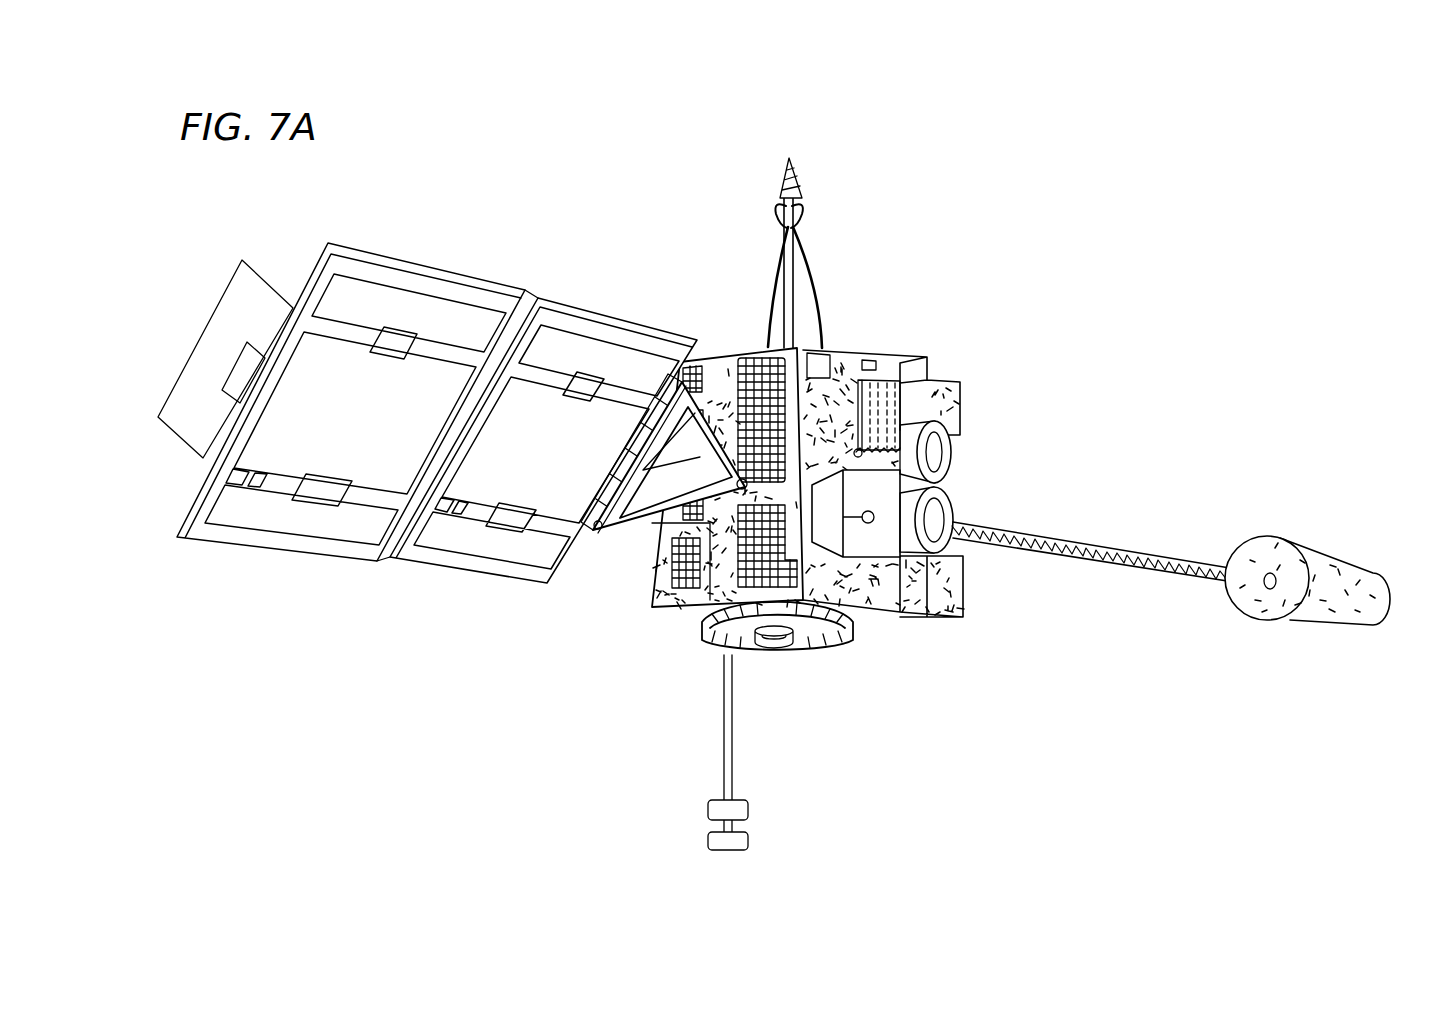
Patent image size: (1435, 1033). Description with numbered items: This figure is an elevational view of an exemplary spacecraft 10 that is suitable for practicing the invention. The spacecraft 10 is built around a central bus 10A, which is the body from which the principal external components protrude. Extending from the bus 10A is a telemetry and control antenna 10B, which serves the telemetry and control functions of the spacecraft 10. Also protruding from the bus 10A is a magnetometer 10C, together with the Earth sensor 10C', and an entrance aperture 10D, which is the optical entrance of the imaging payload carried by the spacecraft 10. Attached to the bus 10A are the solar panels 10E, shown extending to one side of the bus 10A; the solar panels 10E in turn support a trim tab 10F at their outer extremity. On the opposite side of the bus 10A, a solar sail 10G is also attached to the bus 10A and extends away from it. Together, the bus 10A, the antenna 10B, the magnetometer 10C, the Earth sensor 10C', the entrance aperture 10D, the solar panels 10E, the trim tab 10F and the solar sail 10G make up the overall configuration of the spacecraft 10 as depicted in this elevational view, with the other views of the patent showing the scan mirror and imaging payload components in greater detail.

The spacecraft 10 is at (925, 258).
The bus 10A is at (851, 355).
The telemetry and control (T&C) antenna 10B is at (802, 190).
The magnetometer 10C is at (771, 752).
The Earth sensor 10C' is at (869, 323).
The entrance aperture 10D is at (951, 516).
The solar panels 10E is at (553, 294).
The trim tab 10F is at (180, 443).
The solar sail 10G is at (1330, 558).